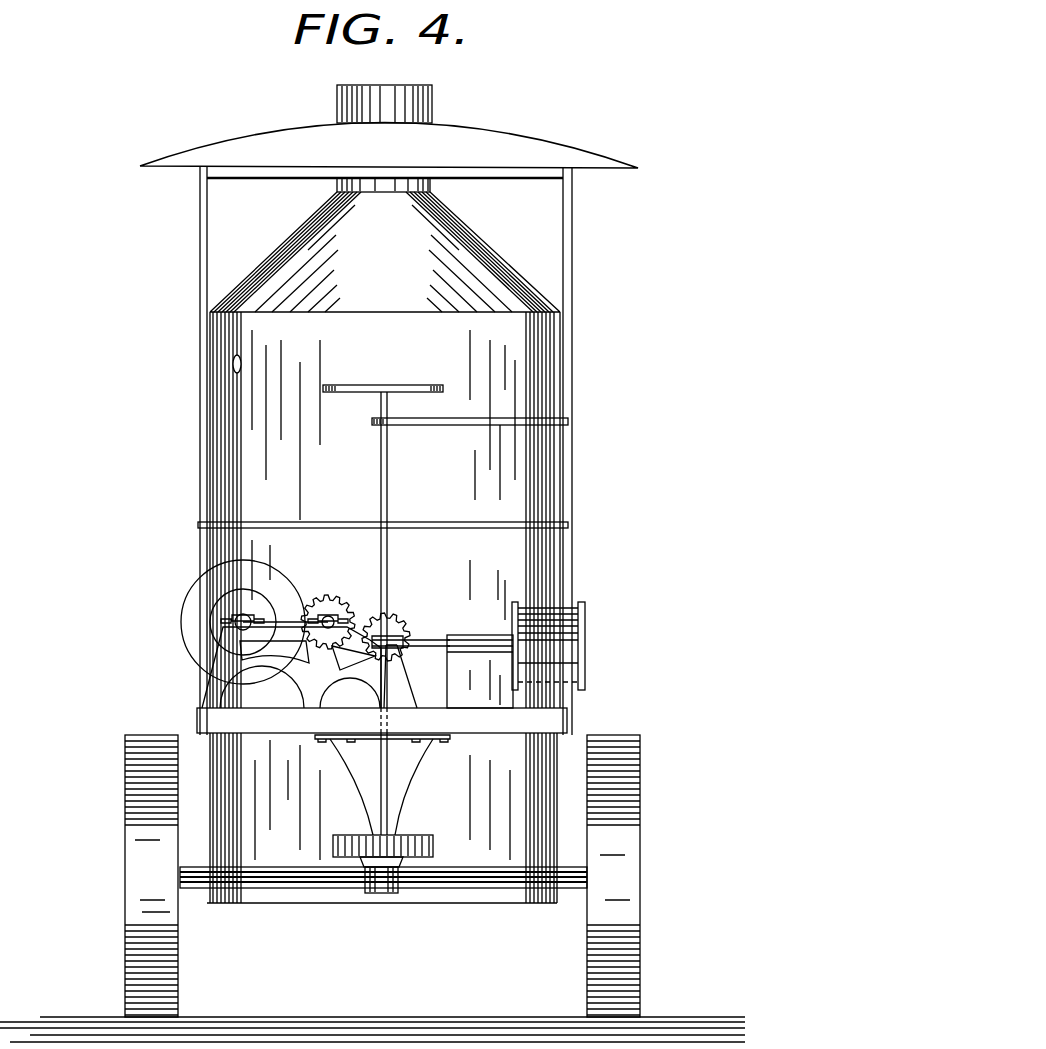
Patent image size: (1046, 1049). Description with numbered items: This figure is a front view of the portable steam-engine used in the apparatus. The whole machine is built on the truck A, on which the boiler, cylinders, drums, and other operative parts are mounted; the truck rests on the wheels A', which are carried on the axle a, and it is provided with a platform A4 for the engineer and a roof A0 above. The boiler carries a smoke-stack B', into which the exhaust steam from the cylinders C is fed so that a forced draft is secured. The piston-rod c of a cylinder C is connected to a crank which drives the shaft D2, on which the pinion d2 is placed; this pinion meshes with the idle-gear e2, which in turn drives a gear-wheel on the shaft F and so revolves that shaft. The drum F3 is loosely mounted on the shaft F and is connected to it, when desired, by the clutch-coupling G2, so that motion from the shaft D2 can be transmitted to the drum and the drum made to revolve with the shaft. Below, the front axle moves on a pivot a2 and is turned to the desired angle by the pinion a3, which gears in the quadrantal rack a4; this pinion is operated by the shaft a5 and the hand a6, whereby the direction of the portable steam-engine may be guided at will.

The roof A0 is at (485, 135).
The smoke-stack B' is at (360, 100).
The clutch-coupling G2 is at (240, 447).
The hand a6 is at (365, 385).
The shaft a5 is at (388, 484).
The platform A4 is at (565, 525).
The drum F3 is at (215, 583).
The shaft F is at (232, 626).
The idle-gear e2 is at (330, 604).
The pinion d2 is at (383, 643).
The shaft D2 is at (414, 624).
The piston-rod c is at (435, 642).
The cylinder C is at (572, 633).
The truck A is at (328, 711).
The wheel A' is at (382, 876).
The pinion a3 is at (362, 858).
The pivot a2 is at (378, 868).
The quadrantal rack a4 is at (430, 858).
The axle a is at (485, 878).